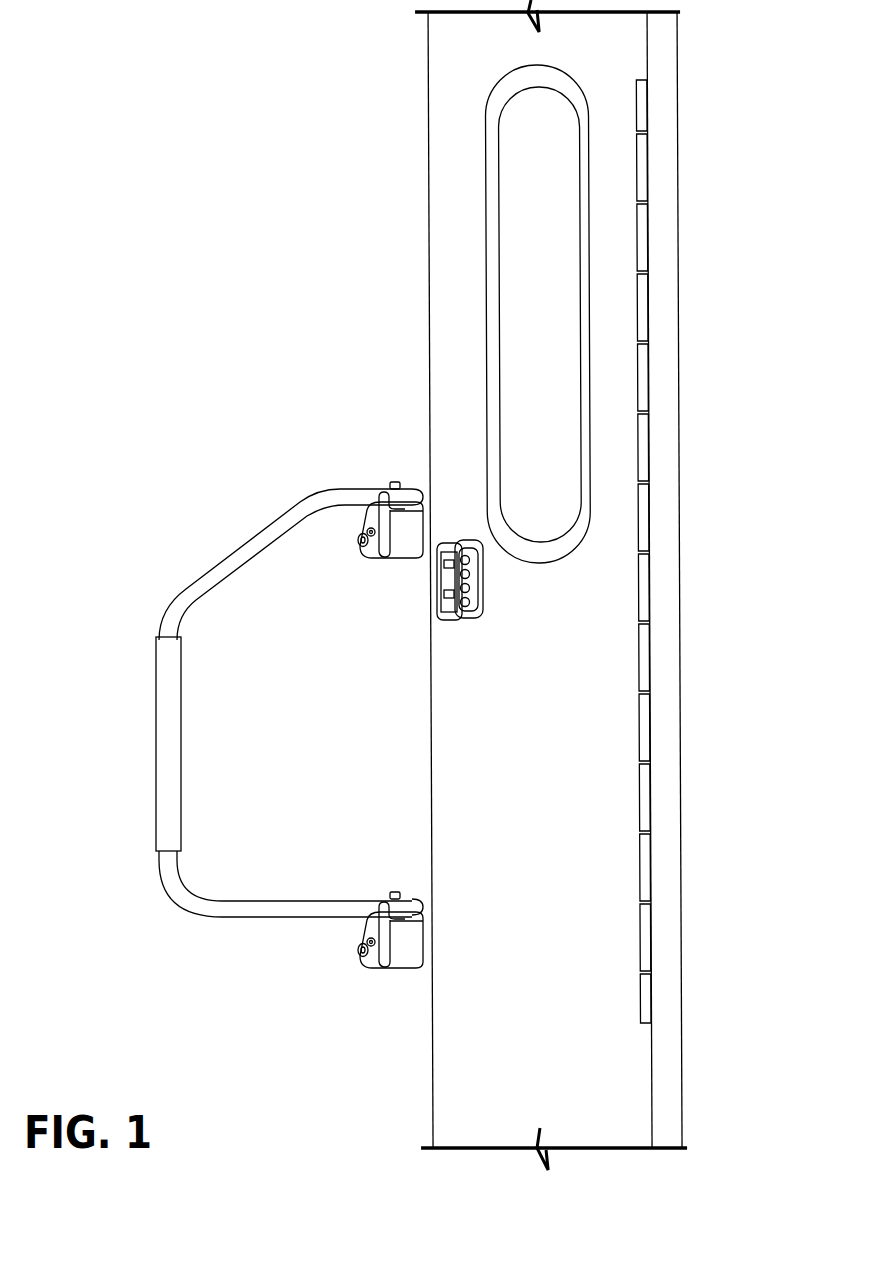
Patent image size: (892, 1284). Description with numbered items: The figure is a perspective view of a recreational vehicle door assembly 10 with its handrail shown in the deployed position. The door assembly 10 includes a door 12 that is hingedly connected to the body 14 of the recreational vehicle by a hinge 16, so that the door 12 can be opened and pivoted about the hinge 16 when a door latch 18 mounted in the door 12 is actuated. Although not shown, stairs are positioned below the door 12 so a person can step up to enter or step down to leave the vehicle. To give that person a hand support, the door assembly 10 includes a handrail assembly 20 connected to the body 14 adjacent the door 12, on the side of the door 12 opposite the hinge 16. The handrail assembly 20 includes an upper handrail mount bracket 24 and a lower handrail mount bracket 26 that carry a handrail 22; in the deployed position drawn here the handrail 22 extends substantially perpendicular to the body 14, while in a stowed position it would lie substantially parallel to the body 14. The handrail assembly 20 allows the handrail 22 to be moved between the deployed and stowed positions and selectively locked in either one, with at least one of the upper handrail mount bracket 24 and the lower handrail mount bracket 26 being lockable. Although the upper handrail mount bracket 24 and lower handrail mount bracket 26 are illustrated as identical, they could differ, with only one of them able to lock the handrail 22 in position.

The door assembly 10 is at (312, 229).
The door 12 is at (429, 338).
The body 14 is at (665, 478).
The hinge 16 is at (649, 372).
The door latch 18 is at (489, 613).
The handrail assembly 20 is at (220, 537).
The handrail 22 is at (177, 591).
The upper handrail mount bracket 24 is at (353, 536).
The lower handrail mount bracket 26 is at (353, 946).